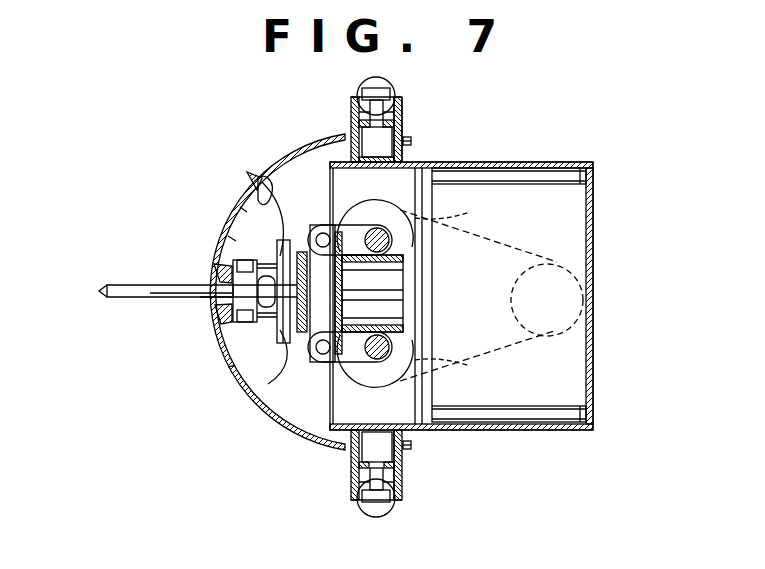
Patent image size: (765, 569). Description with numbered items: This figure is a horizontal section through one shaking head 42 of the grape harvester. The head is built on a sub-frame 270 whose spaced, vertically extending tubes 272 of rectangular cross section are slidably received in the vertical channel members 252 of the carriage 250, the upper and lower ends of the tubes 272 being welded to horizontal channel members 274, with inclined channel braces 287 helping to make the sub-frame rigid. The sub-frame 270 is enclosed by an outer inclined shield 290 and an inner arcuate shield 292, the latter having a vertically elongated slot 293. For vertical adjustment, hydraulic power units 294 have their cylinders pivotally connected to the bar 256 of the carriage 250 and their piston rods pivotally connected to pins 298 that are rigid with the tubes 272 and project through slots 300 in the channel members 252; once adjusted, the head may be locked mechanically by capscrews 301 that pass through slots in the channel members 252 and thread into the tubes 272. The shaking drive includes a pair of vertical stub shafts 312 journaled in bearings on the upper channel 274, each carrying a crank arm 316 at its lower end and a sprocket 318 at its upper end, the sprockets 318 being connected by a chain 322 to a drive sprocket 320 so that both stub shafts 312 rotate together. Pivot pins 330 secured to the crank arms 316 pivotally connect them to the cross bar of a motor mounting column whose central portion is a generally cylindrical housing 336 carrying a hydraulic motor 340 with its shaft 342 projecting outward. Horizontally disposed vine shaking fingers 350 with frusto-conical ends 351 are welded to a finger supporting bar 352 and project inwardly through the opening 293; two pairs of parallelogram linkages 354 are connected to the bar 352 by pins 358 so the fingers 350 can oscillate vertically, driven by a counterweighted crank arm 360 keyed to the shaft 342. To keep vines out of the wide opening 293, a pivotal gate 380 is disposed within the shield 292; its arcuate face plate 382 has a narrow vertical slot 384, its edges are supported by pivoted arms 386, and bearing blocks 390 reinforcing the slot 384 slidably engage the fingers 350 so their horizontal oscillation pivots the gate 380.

The shaking head 42 is at (176, 172).
The carriage 250 is at (412, 116).
The vertical channel member 252 is at (352, 128).
The bar 256 is at (350, 98).
The sub-frame 270 is at (527, 167).
The vertically extending tube 272 is at (402, 129).
The horizontal channel member 274 is at (420, 392).
The inclined channel brace 287 is at (583, 177).
The outer inclined shield 290 is at (595, 201).
The inner arcuate shield 292 is at (295, 441).
The vertically elongated slot 293 is at (225, 235).
The hydraulic power unit 294 is at (398, 86).
The pin 298 is at (378, 85).
The slot 300 is at (359, 112).
The capscrew 301 is at (414, 143).
The stub shaft 312 is at (380, 240).
The crank arm 316 is at (350, 230).
The sprocket 318 is at (440, 218).
The drive sprocket 320 is at (510, 268).
The chain 322 is at (505, 238).
The pivot pin 330 is at (334, 224).
The cylindrical housing 336 is at (316, 248).
The hydraulic motor 340 is at (400, 297).
The motor shaft 342 is at (323, 351).
The vine shaking finger 350 is at (148, 287).
The frusto-conical end 351 is at (108, 292).
The finger supporting bar 352 is at (237, 311).
The parallelogram linkage 354 is at (268, 322).
The pin 358 is at (243, 262).
The counterweighted crank arm 360 is at (271, 381).
The pivotal gate 380 is at (251, 190).
The arcuate face plate 382 is at (240, 207).
The narrow vertical slot 384 is at (212, 298).
The arm 386 is at (253, 173).
The bearing block 390 is at (222, 275).